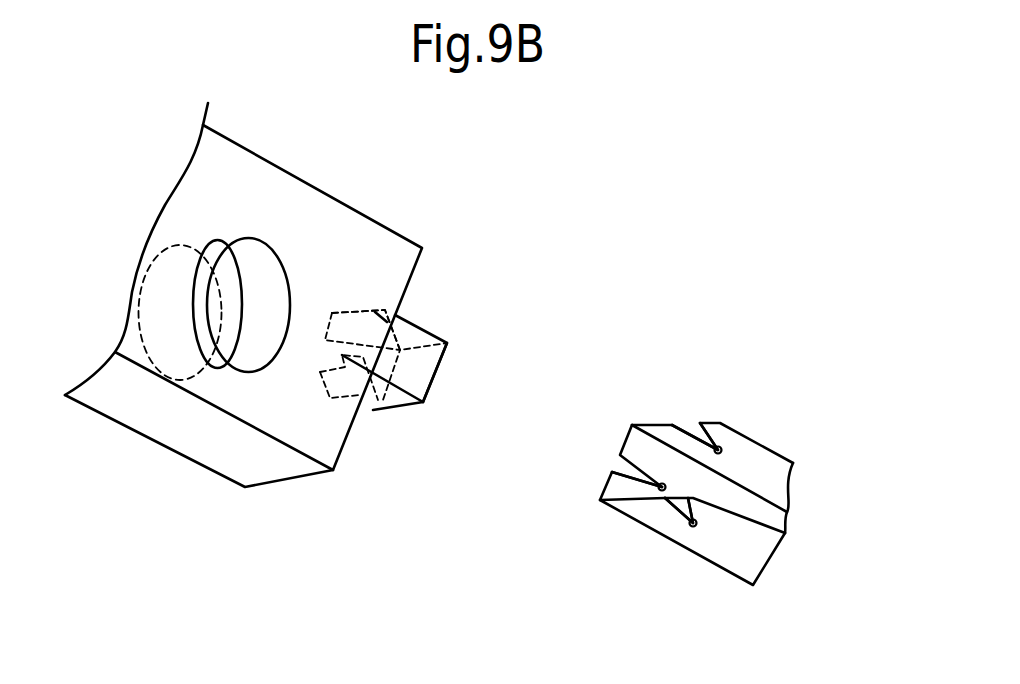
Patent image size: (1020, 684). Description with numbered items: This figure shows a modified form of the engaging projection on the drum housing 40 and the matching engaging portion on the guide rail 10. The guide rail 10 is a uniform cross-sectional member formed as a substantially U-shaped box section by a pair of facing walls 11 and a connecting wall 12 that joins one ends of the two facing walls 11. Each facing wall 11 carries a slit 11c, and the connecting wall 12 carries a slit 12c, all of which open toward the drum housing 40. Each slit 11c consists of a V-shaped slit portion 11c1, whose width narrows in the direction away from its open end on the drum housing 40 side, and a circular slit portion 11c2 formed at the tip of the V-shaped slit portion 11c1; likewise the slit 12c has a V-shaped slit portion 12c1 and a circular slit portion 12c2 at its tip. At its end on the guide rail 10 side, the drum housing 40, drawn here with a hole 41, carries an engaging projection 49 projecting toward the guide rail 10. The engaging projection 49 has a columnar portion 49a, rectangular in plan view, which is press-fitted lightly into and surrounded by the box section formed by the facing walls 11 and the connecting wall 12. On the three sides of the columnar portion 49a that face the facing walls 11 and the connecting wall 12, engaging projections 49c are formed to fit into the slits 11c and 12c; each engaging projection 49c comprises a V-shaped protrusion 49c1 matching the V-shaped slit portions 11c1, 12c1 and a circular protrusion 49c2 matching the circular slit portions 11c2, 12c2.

The guide rail 10 is at (816, 354).
The facing walls 11 is at (770, 460).
The slit 11c is at (795, 290).
The V-shaped slit portion 11c1 is at (694, 432).
The circular slit portion 11c2 is at (721, 446).
The connecting wall 12 is at (612, 486).
The slit 12c is at (653, 335).
The V-shaped slit portion 12c1 is at (624, 470).
The circular slit portion 12c2 is at (661, 483).
The drum housing 40 is at (282, 162).
The hole 41 is at (262, 275).
The engaging projection 49 is at (428, 320).
The columnar portion 49a is at (422, 378).
The engaging projections 49c is at (497, 163).
The V-shaped protrusion 49c1 is at (378, 312).
The circular protrusion 49c2 is at (396, 314).